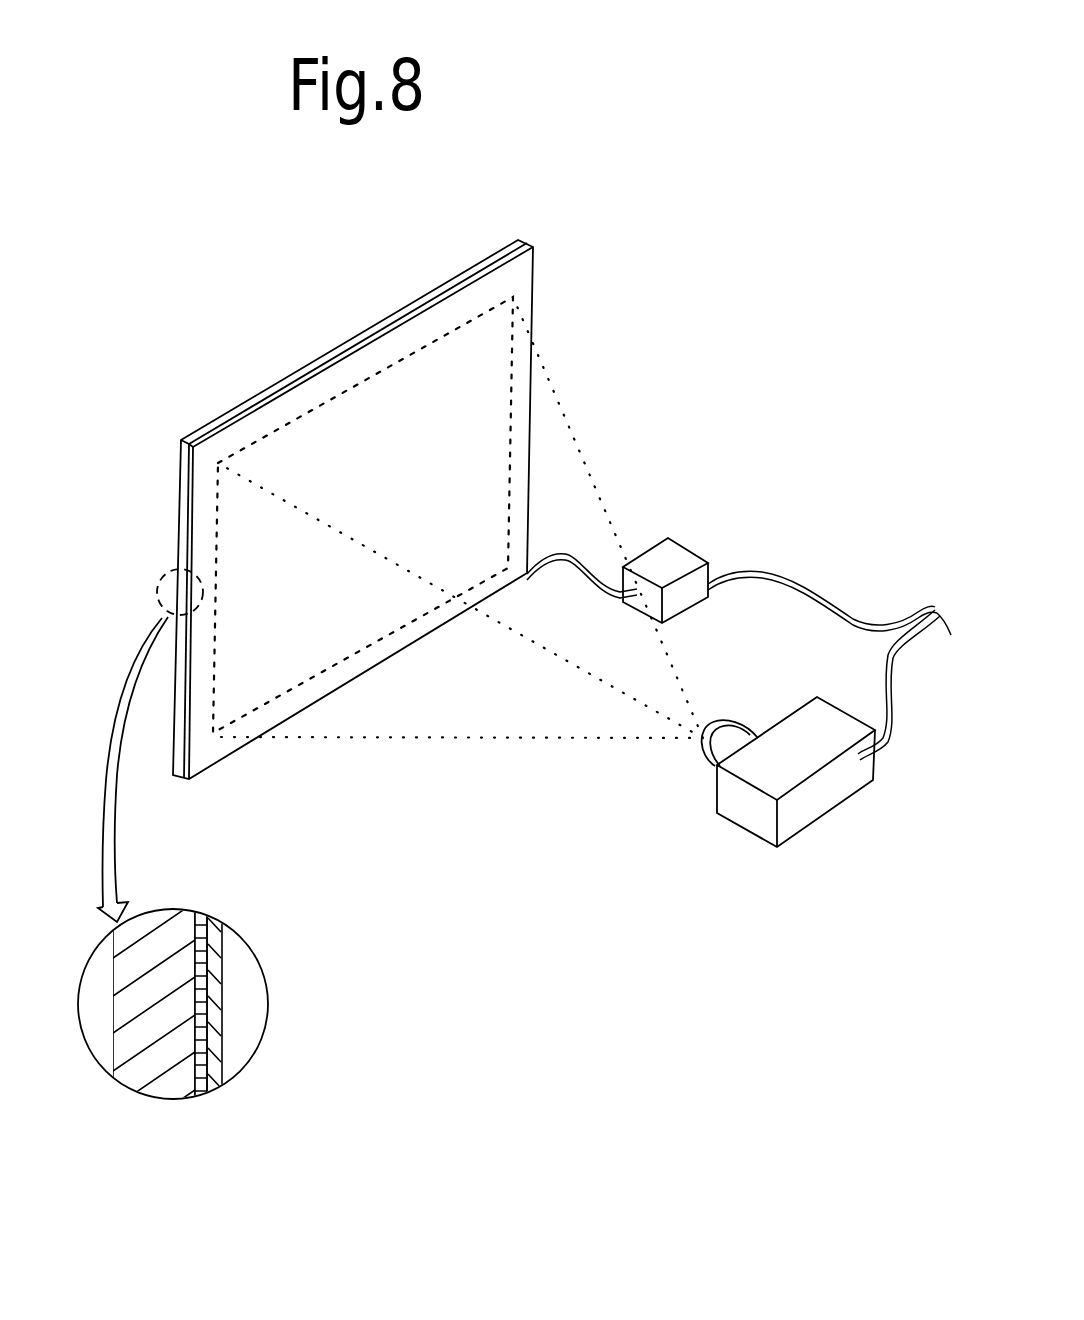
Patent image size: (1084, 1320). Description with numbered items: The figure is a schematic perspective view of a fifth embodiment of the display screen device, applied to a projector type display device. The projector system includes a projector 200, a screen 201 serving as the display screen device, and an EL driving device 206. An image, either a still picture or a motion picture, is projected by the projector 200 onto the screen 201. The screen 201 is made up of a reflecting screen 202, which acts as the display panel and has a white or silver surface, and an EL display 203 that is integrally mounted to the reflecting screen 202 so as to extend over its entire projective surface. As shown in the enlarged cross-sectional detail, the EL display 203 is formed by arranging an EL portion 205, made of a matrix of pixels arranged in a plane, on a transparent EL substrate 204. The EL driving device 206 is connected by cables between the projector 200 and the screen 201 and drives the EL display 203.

The projector 200 is at (797, 815).
The screen 201 is at (524, 268).
The reflecting screen 202 is at (127, 1043).
The EL display 203 is at (220, 972).
The transparent EL substrate 204 is at (212, 1073).
The EL portion 205 is at (194, 1097).
The EL driving device 206 is at (678, 563).